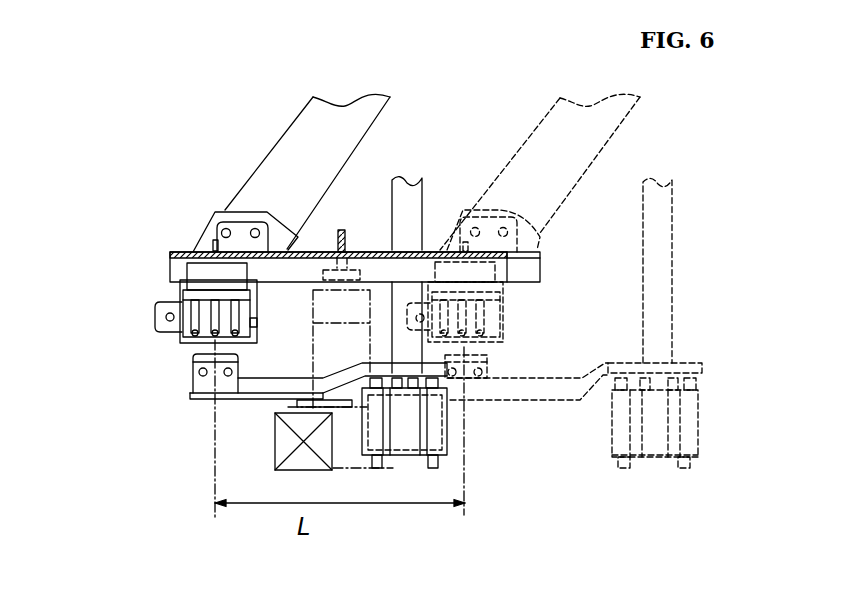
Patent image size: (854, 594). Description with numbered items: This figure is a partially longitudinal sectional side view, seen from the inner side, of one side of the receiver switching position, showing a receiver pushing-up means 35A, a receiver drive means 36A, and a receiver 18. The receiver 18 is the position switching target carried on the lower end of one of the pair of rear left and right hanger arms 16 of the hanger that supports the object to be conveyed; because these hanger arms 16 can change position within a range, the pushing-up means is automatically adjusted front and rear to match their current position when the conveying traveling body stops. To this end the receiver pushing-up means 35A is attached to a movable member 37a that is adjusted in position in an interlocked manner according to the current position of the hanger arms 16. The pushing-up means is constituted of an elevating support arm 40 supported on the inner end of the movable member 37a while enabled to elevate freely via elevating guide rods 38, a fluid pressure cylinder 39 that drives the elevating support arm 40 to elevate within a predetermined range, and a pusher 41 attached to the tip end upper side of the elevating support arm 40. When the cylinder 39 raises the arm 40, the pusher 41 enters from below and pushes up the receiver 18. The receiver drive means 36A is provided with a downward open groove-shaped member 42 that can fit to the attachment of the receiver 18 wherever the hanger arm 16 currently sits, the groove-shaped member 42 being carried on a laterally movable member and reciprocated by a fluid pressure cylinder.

The hanger arm 16 is at (303, 130).
The receiver 18 is at (200, 262).
The receiver drive means 36A is at (318, 250).
The movable member 37a is at (407, 193).
The groove-shaped member 42 is at (372, 247).
The pusher 41 is at (198, 355).
The receiver pushing-up means 35A is at (192, 378).
The elevating support arm 40 is at (250, 400).
The fluid pressure cylinder 39 is at (407, 440).
The elevating guide rod 38 is at (375, 468).